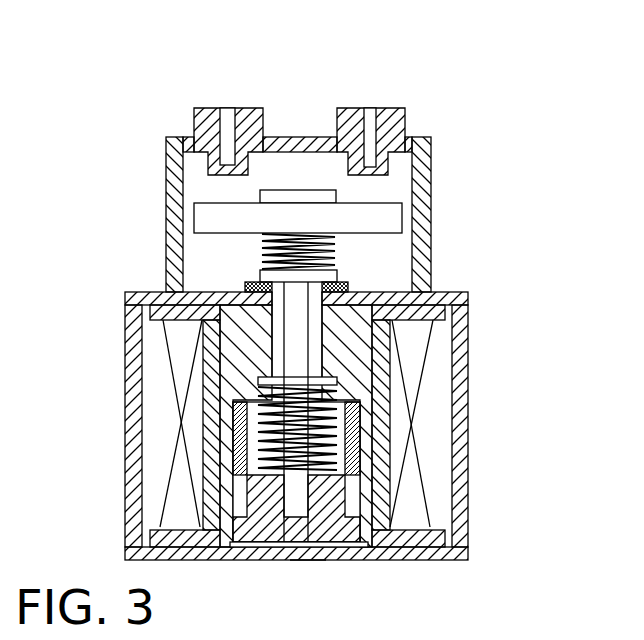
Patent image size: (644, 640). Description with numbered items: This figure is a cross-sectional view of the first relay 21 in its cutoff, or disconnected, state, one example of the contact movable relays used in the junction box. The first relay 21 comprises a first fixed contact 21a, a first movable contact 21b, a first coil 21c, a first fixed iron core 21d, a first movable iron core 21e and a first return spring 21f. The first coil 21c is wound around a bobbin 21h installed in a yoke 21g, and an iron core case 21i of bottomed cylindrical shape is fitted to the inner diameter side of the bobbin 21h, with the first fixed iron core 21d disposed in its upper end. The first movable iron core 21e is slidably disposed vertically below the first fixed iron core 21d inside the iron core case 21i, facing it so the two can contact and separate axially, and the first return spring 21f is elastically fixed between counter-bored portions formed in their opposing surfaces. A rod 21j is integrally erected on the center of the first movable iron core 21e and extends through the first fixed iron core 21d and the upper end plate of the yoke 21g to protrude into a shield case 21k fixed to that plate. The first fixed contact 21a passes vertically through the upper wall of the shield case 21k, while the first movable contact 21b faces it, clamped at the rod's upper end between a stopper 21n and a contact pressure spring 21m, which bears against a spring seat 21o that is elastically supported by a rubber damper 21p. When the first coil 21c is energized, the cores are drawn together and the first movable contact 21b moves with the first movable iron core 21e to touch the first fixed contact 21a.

The first relay 21 is at (148, 82).
The first fixed contact 21a is at (245, 107).
The first movable contact 21b is at (402, 216).
The first coil 21c is at (165, 482).
The first fixed iron core 21d is at (246, 353).
The first movable iron core 21e is at (332, 490).
The first return spring 21f is at (240, 420).
The yoke 21g is at (126, 552).
The bobbin 21h is at (340, 416).
The iron core case 21i is at (308, 560).
The rod 21j is at (302, 335).
The shield case 21k is at (166, 184).
The contact pressure spring 21m is at (337, 250).
The stopper 21n is at (294, 190).
The spring seat 21o is at (260, 276).
The rubber damper 21p is at (246, 287).